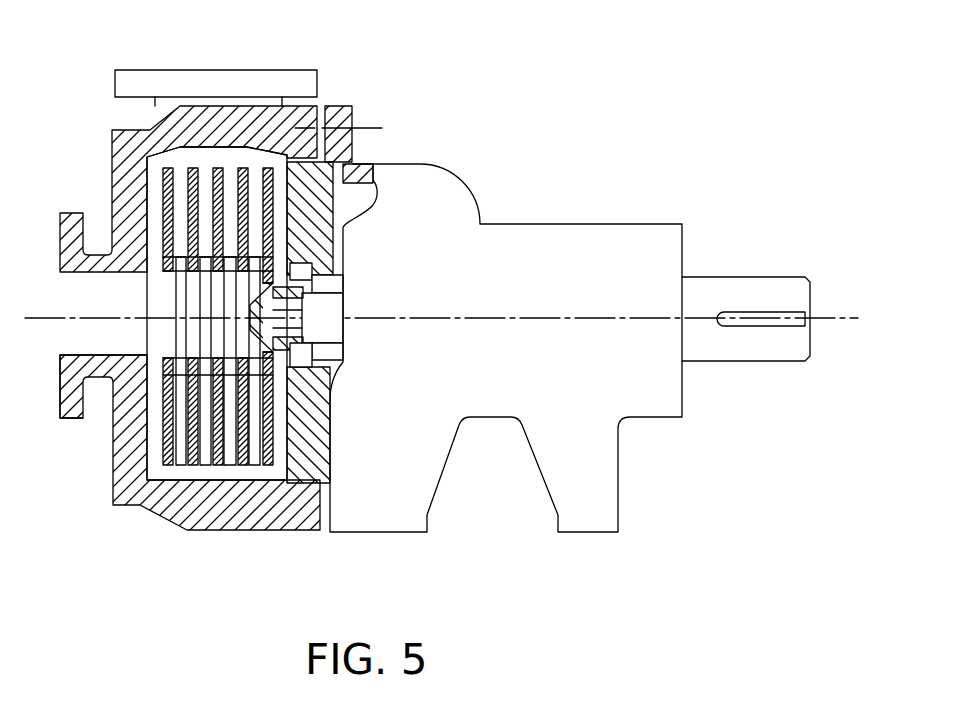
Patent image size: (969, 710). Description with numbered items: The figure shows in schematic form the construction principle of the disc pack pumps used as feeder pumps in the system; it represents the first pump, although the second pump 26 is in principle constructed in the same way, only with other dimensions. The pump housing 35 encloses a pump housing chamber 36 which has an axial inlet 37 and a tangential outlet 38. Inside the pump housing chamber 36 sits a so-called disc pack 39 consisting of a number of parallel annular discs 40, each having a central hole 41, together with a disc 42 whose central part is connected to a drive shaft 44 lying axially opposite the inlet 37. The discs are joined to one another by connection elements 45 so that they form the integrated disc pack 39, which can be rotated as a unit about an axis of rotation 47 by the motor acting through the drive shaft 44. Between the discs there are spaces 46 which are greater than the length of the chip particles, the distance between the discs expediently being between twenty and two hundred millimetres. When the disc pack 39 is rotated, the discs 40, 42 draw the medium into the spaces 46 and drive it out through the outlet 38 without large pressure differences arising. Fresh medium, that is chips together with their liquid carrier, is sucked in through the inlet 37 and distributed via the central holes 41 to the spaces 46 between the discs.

The second pump 26 is at (478, 172).
The pump housing 35 is at (114, 136).
The pump housing chamber 36 is at (172, 477).
The axial inlet 37 is at (68, 333).
The tangential outlet 38 is at (270, 69).
The disc pack 39 is at (160, 258).
The annular discs 40 is at (313, 470).
The central hole 41 is at (170, 297).
The disc 42 is at (250, 467).
The drive shaft 44 is at (710, 285).
The connection elements 45 is at (163, 250).
The spaces 46 is at (187, 423).
The axis of rotation 47 is at (826, 318).